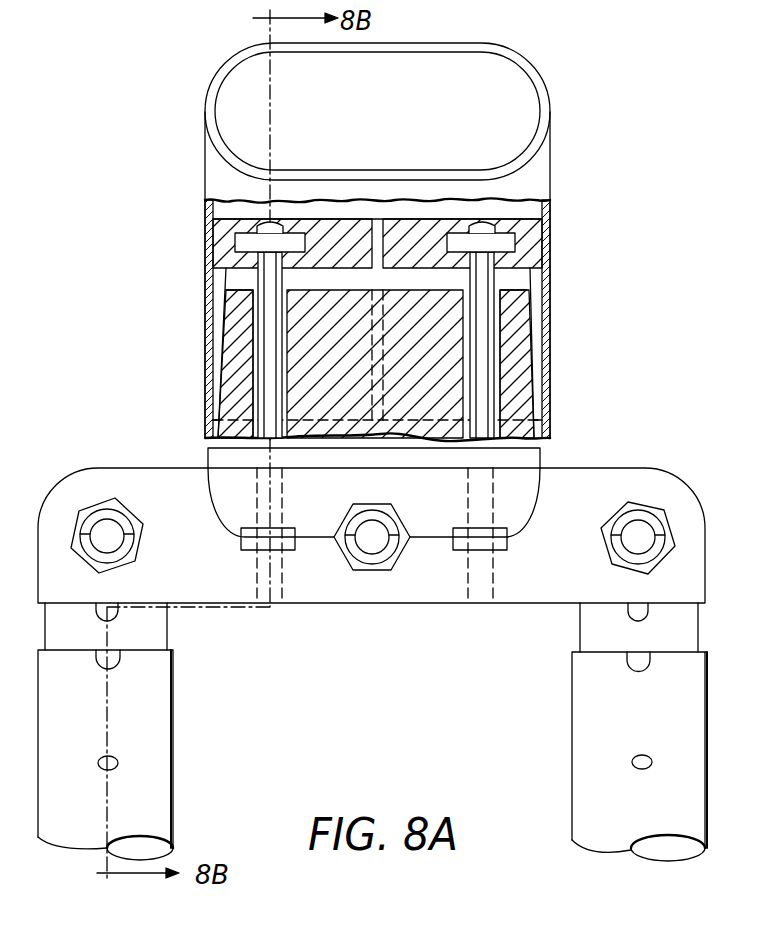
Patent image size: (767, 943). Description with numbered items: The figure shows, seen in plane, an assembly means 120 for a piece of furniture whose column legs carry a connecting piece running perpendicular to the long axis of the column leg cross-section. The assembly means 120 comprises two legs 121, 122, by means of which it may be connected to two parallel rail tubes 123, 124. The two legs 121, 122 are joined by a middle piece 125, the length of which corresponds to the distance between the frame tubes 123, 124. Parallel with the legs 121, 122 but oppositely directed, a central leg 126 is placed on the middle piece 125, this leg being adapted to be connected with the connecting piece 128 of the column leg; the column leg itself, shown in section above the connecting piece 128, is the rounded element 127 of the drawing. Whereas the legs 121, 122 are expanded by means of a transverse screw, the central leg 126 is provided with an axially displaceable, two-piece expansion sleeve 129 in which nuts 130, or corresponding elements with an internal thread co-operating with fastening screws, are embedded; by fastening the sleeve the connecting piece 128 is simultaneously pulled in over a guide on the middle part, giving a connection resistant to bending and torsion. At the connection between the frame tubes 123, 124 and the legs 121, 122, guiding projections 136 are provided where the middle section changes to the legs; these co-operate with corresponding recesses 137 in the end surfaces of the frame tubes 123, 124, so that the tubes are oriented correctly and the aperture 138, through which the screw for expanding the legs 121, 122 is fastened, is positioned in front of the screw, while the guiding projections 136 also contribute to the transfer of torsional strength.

The assembly means 120 is at (600, 483).
The leg 121 is at (673, 628).
The leg 122 is at (152, 638).
The rail tube 123 is at (669, 756).
The rail tube 124 is at (140, 755).
The middle piece 125 is at (397, 598).
The central leg 126 is at (545, 427).
The ring handle 127 is at (548, 90).
The connecting piece 128 is at (550, 207).
The expansion sleeve 129 is at (533, 245).
The nut 130 is at (245, 243).
The guiding projection 136 is at (650, 620).
The recess 137 is at (650, 662).
The aperture 138 is at (118, 763).